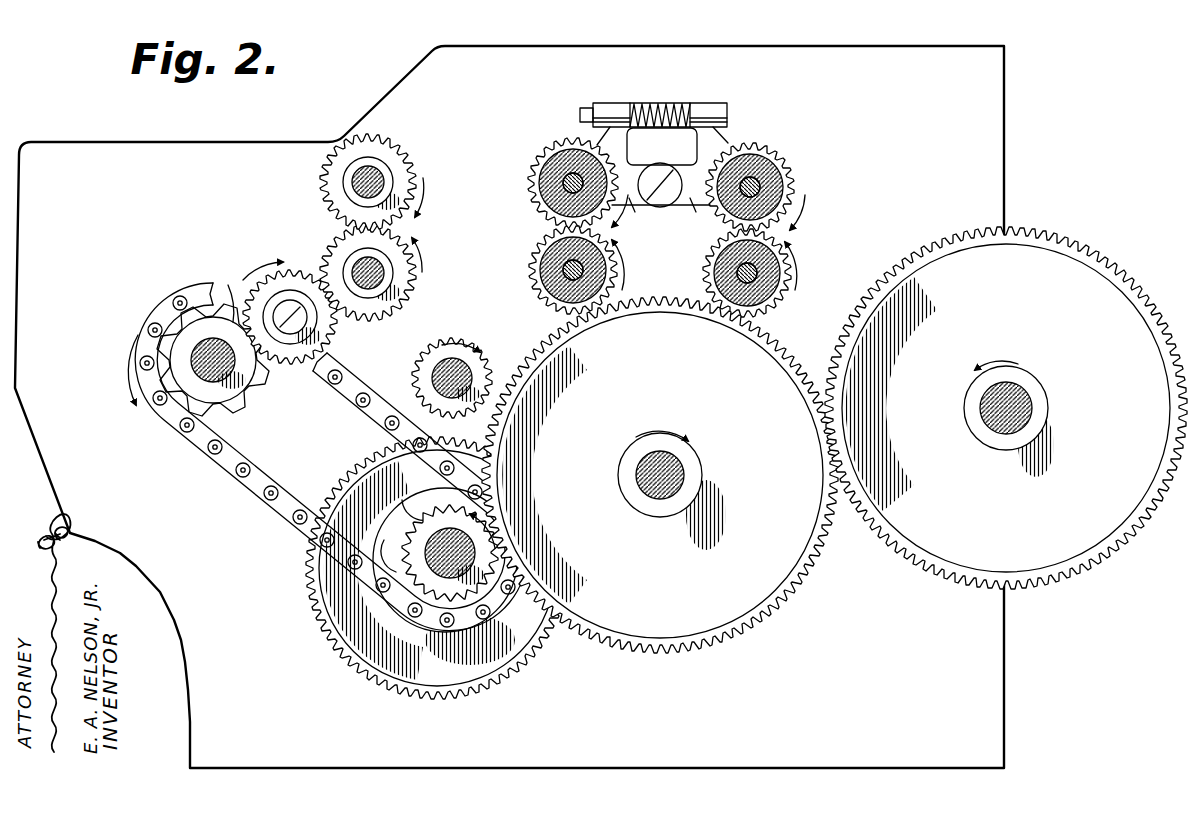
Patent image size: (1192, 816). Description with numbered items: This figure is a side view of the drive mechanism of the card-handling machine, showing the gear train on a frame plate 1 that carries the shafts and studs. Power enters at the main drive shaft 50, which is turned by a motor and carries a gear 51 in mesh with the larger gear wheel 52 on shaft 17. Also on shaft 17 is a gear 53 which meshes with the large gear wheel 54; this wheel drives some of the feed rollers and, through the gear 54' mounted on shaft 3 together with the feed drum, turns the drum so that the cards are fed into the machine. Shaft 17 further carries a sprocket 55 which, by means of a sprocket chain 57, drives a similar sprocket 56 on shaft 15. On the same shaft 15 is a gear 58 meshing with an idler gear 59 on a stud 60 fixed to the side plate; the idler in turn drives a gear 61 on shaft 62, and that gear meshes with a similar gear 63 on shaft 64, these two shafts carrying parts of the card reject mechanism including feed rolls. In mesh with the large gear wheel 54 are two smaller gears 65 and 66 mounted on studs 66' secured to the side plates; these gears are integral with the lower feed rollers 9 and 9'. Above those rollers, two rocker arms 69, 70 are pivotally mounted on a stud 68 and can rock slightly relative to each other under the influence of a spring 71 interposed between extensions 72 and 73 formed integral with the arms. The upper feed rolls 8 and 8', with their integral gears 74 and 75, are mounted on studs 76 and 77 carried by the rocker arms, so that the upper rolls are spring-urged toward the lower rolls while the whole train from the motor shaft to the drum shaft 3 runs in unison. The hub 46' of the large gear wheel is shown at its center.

The frame plate 1 is at (994, 123).
The shaft 3 is at (999, 426).
The upper feed roll 8 is at (553, 183).
The upper feed roll 8' is at (751, 168).
The lower feed roll 9 is at (550, 270).
The lower feed roll 9' is at (772, 273).
The shaft 15 is at (200, 368).
The shaft 17 is at (468, 555).
The shaft of gear 54 46' is at (660, 487).
The main drive shaft 50 is at (460, 378).
The gear 51 is at (420, 373).
The larger gear wheel 52 is at (433, 673).
The gear 53 is at (417, 583).
The gear wheel 54 is at (660, 495).
The gear 54' is at (1006, 420).
The sprocket 55 is at (380, 553).
The sprocket 56 is at (262, 400).
The sprocket chain 57 is at (282, 508).
The gear 58 is at (236, 312).
The idler gear 59 is at (297, 287).
The stud 60 is at (298, 318).
The gear 61 is at (385, 307).
The shaft 62 is at (380, 277).
The gear 63 is at (415, 178).
The shaft 64 is at (378, 170).
The gear 65 is at (545, 295).
The gear 66 is at (734, 273).
The stud 66' is at (700, 284).
The stud 68 is at (660, 172).
The rocker arm 69 is at (634, 208).
The rocker arm 70 is at (693, 208).
The spring 71 is at (663, 112).
The extension 72 is at (608, 112).
The extension 73 is at (710, 112).
The gear 74 is at (552, 158).
The gear 75 is at (780, 152).
The stud 76 is at (562, 192).
The stud 77 is at (758, 188).